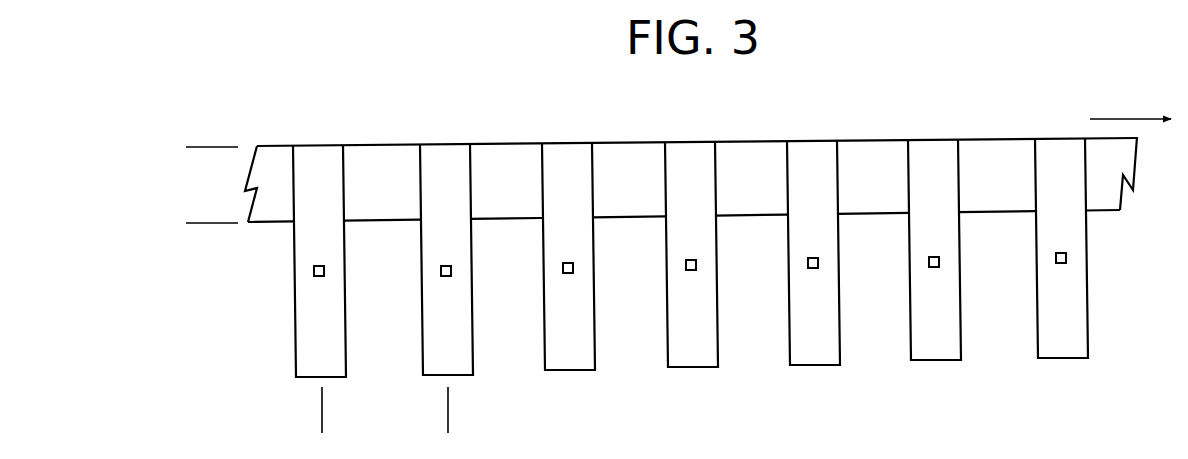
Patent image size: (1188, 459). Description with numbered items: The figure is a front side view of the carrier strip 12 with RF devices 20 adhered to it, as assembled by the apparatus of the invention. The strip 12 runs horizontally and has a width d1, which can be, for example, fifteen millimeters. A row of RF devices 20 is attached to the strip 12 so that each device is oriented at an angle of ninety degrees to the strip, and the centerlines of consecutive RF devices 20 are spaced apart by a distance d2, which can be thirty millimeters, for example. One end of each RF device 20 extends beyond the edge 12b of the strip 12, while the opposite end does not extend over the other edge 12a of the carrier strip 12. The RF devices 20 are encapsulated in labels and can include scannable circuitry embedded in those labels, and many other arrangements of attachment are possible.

The carrier strip 12 is at (997, 205).
The edge of carrier strip 12a is at (437, 145).
The edge of strip 12b is at (628, 208).
The RF device 20 is at (568, 141).
The width d1 is at (199, 148).
The distance d2 is at (447, 420).